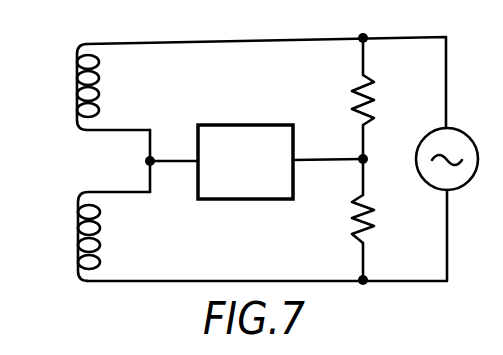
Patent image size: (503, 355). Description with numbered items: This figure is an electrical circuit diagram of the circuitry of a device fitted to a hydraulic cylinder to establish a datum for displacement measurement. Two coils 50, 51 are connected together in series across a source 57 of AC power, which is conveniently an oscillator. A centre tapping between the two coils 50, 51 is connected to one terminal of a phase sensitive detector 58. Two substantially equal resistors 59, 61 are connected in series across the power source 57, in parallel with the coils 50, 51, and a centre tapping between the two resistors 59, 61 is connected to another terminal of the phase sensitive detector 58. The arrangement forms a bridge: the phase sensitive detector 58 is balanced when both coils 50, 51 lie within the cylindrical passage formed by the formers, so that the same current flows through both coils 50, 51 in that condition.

The coil 50 is at (77, 85).
The coil 51 is at (78, 234).
The source of AC power 57 is at (458, 176).
The phase sensitive detector 58 is at (247, 188).
The resistor 59 is at (376, 98).
The resistor 61 is at (376, 228).